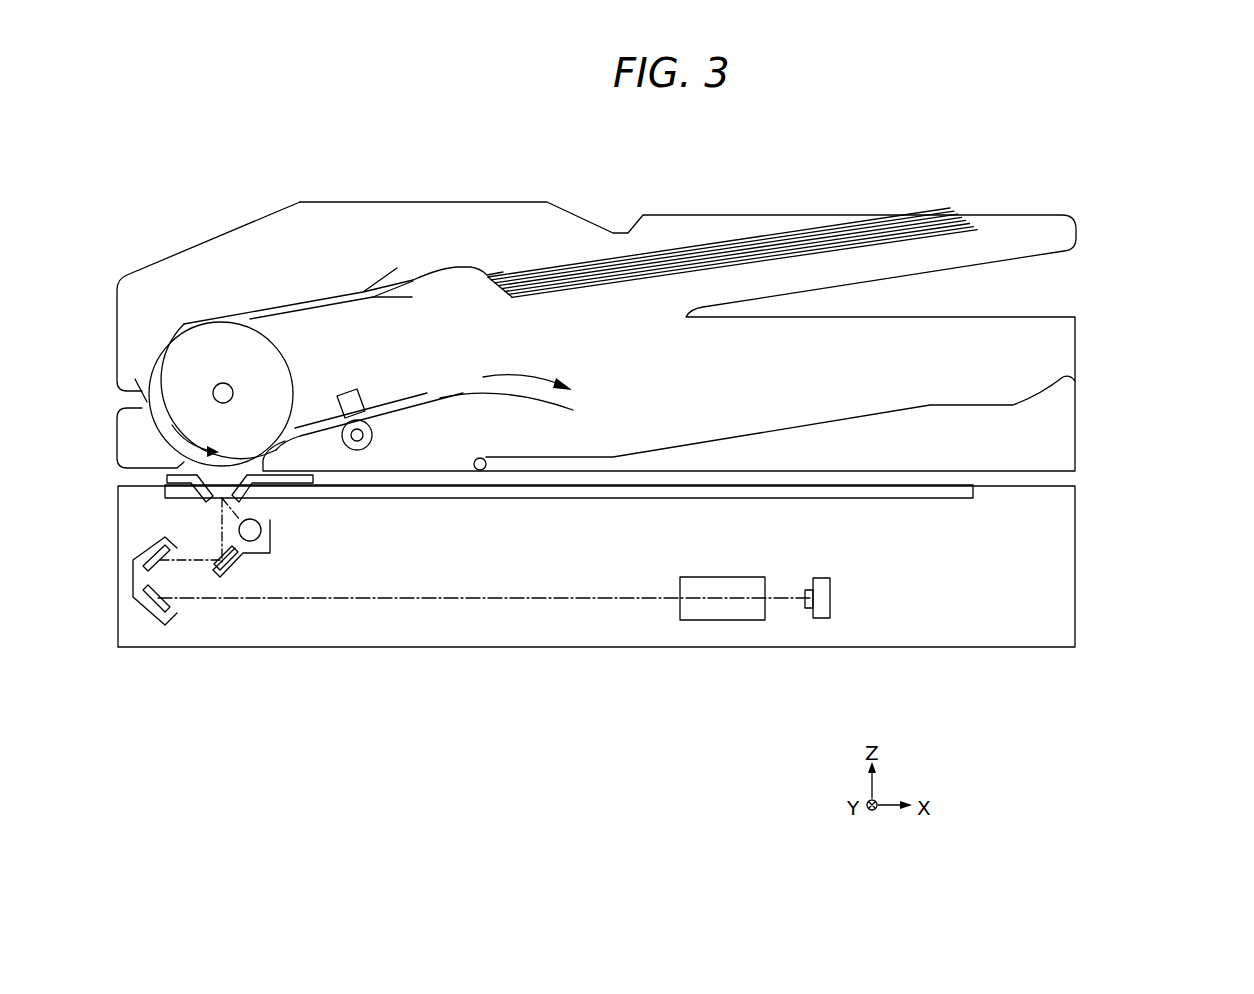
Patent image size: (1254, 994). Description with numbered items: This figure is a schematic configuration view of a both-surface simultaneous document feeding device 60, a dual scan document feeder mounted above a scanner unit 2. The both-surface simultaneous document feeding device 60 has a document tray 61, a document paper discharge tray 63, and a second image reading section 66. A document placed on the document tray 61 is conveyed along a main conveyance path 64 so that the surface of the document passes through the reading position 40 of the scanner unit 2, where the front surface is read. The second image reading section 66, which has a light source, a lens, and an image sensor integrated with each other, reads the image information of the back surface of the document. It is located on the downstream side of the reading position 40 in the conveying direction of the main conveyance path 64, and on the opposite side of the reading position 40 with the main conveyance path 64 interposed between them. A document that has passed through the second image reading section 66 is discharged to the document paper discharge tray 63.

The scanner unit 2 is at (1076, 520).
The reading position 40 is at (203, 520).
The both-surface simultaneous document feeding device 60 is at (1115, 353).
The document tray 61 is at (783, 233).
The document paper discharge tray 63 is at (690, 443).
The main conveyance path 64 is at (347, 293).
The second image reading section 66 is at (352, 392).